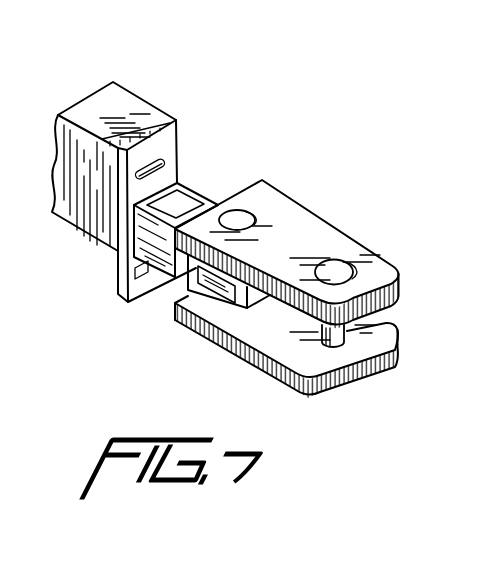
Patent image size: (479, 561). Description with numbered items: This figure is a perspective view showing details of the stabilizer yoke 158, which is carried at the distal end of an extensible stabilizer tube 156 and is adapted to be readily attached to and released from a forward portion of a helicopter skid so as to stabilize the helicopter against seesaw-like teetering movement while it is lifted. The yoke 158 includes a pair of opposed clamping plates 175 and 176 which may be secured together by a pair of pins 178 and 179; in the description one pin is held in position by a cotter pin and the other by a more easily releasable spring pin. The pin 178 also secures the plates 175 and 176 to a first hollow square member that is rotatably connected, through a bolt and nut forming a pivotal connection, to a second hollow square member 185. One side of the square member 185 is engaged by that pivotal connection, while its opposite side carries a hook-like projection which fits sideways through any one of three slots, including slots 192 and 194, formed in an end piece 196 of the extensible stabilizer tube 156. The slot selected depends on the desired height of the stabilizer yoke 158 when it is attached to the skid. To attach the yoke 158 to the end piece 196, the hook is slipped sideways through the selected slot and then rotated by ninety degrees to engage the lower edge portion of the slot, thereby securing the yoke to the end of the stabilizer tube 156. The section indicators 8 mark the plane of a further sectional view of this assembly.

The section line 8- 8 is at (28, 70).
The extensible stabilizer tube 156 is at (145, 112).
The end piece 196 is at (177, 145).
The second hollow square member 185 is at (180, 186).
The pin 178 is at (263, 222).
The stabilizer yoke 158 is at (327, 200).
The pin 179 is at (342, 260).
The slot 192 is at (140, 178).
The slot 194 is at (118, 292).
The clamping plate 175 is at (396, 297).
The clamping plate 176 is at (353, 390).